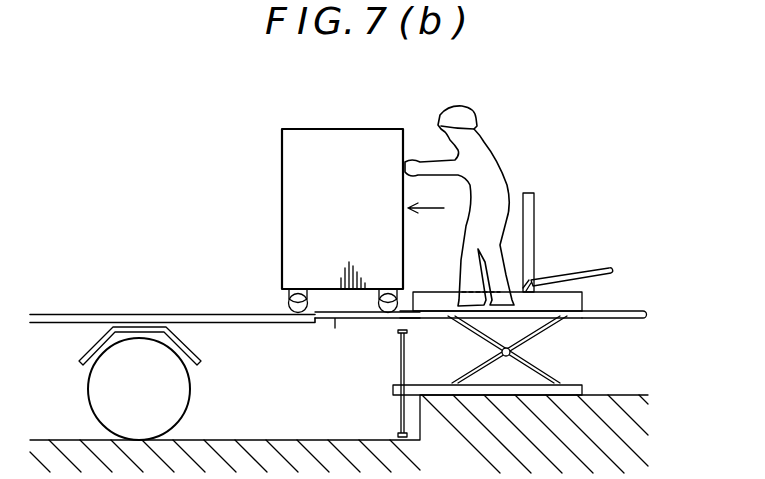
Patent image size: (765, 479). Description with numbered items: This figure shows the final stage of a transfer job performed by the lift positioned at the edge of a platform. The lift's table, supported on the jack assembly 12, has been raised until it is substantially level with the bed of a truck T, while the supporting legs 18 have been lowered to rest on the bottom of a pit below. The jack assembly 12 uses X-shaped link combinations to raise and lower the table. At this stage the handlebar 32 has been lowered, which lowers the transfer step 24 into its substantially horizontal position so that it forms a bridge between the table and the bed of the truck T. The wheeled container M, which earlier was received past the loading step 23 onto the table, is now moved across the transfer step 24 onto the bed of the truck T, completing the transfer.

The container M is at (297, 162).
The truck T is at (113, 297).
The transfer step 24 is at (333, 318).
The loading step 23 is at (620, 311).
The jack assembly 12 is at (549, 363).
The supporting leg 18 is at (398, 362).
The handlebar 32 is at (572, 270).